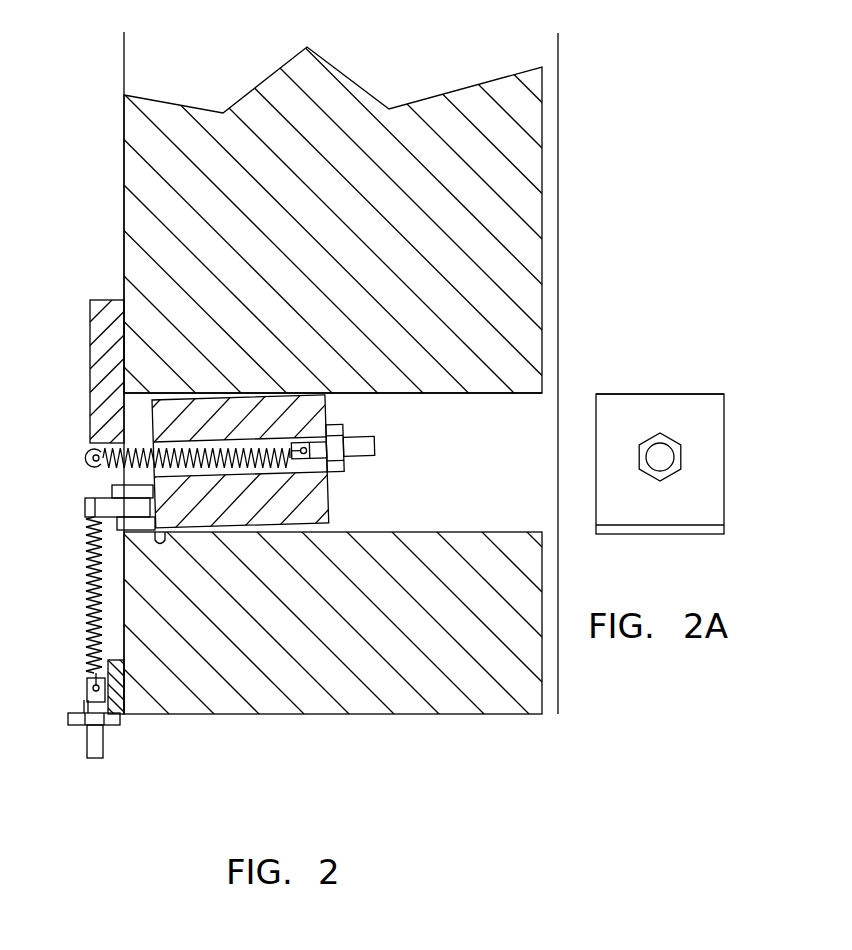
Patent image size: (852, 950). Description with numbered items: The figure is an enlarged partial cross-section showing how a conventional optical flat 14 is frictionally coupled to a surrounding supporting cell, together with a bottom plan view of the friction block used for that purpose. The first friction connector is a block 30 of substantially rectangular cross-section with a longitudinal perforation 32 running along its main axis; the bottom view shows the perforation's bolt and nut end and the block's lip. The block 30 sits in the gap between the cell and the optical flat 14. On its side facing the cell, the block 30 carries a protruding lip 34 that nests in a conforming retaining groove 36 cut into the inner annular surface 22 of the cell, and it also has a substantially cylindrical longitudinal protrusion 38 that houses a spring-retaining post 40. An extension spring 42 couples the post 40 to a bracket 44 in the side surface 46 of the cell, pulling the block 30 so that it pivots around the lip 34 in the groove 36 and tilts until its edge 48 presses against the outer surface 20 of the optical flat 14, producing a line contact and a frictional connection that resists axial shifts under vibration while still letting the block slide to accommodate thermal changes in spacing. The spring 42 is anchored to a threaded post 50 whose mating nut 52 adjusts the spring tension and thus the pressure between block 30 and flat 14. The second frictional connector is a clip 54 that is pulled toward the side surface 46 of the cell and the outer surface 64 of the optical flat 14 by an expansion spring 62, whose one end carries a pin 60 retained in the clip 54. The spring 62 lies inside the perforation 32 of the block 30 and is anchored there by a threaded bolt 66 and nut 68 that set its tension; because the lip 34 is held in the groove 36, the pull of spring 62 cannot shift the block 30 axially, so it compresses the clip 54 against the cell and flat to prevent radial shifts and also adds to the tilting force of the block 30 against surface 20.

In FIG. 2, the optical flat 14 is at (507, 219).
In FIG. 2, the outer surface of the optical flat 20 is at (480, 394).
In FIG. 2, the inner annular surface of the cell 22 is at (457, 531).
In FIG. 2, the block 30 is at (345, 504).
In FIG. 2A, the block 30 is at (720, 356).
In FIG. 2, the longitudinal perforation 32 is at (326, 417).
In FIG. 2, the protruding lip 34 is at (165, 532).
In FIG. 2A, the protruding lip 34 is at (697, 528).
In FIG. 2, the retaining groove 36 is at (157, 540).
In FIG. 2, the cylindrical longitudinal protrusion 38 is at (112, 480).
In FIG. 2, the spring-retaining post 40 is at (110, 506).
In FIG. 2, the extension spring 42 is at (88, 582).
In FIG. 2, the bracket 44 is at (118, 683).
In FIG. 2, the side surface of the cell 46 is at (100, 656).
In FIG. 2, the edge of the block 48 is at (285, 443).
In FIG. 2A, the edge of the block 48 is at (663, 394).
In FIG. 2, the threaded post 50 is at (95, 746).
In FIG. 2, the nut 52 is at (120, 726).
In FIG. 2, the clip 54 is at (98, 286).
In FIG. 2, the pin 60 is at (88, 452).
In FIG. 2, the expansion spring 62 is at (218, 446).
In FIG. 2, the outer surface of the optical flat 64 is at (124, 147).
In FIG. 2, the threaded bolt 66 is at (360, 446).
In FIG. 2A, the threaded bolt 66 is at (663, 456).
In FIG. 2, the nut 68 is at (347, 488).